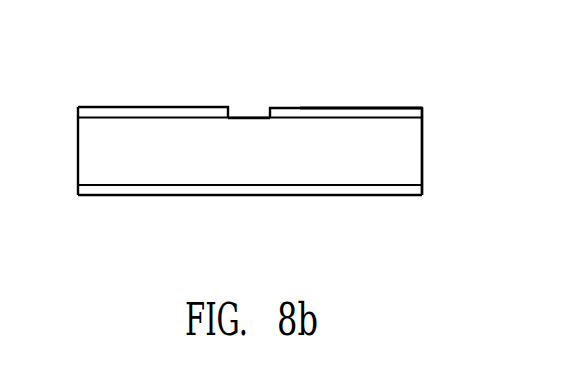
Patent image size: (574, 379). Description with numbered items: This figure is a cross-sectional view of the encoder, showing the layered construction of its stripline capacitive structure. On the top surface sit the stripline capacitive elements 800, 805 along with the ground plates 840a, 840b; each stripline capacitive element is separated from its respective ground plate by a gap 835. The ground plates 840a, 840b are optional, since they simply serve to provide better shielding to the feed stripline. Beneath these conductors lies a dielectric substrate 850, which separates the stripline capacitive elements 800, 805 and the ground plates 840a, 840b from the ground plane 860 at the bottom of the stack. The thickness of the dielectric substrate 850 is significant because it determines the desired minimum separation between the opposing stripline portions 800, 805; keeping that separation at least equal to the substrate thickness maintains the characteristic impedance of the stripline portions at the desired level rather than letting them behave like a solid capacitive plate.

The stripline capacitive element 800 is at (380, 108).
The stripline capacitive element 805 is at (380, 74).
The gap 835 is at (252, 112).
The ground plate 840a is at (112, 107).
The ground plate 840b is at (291, 77).
The dielectric substrate 850 is at (372, 164).
The ground plane 860 is at (375, 197).